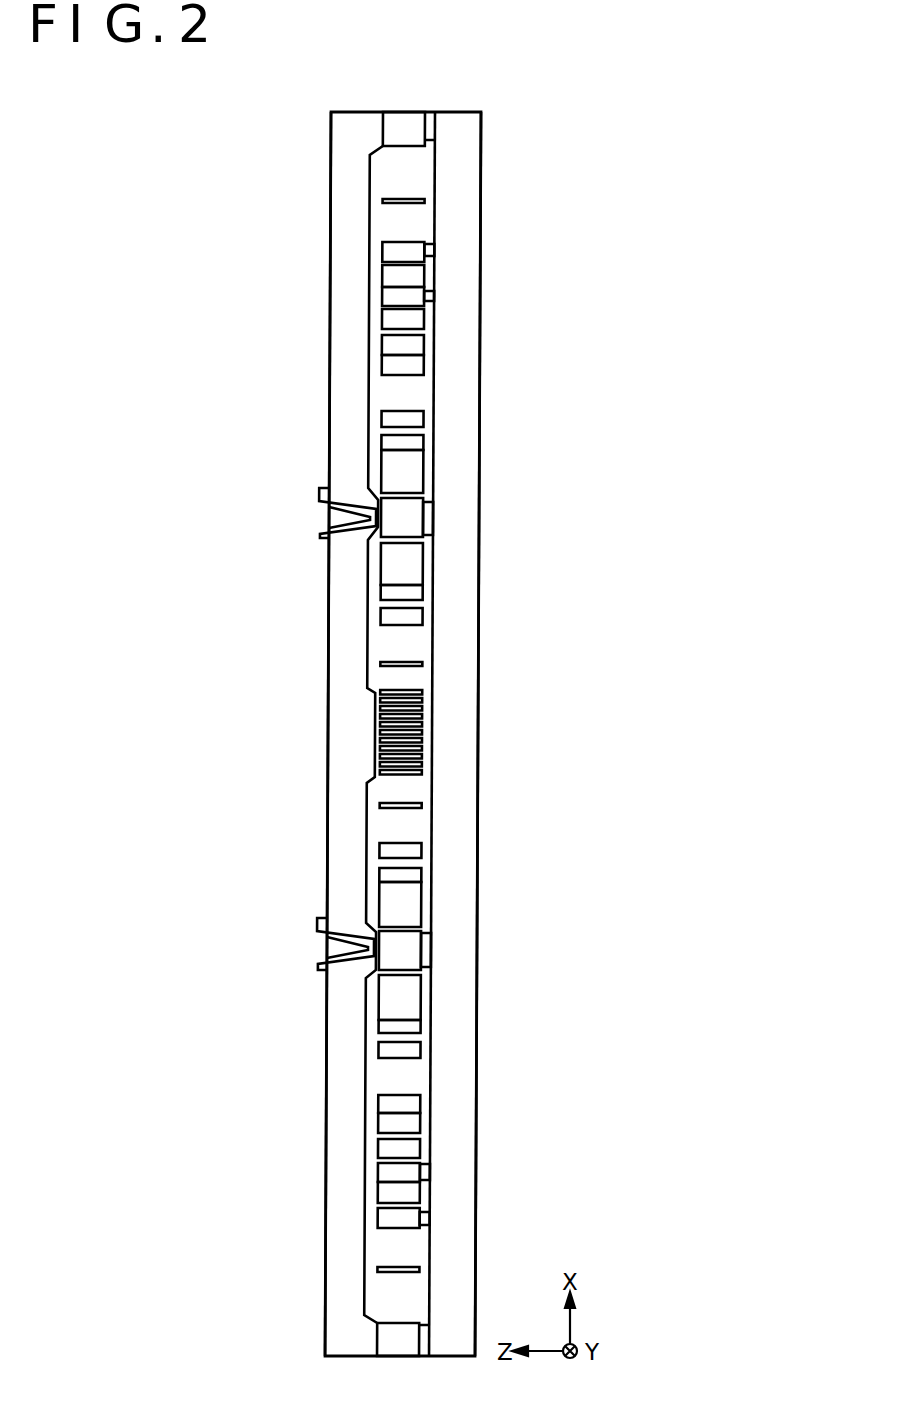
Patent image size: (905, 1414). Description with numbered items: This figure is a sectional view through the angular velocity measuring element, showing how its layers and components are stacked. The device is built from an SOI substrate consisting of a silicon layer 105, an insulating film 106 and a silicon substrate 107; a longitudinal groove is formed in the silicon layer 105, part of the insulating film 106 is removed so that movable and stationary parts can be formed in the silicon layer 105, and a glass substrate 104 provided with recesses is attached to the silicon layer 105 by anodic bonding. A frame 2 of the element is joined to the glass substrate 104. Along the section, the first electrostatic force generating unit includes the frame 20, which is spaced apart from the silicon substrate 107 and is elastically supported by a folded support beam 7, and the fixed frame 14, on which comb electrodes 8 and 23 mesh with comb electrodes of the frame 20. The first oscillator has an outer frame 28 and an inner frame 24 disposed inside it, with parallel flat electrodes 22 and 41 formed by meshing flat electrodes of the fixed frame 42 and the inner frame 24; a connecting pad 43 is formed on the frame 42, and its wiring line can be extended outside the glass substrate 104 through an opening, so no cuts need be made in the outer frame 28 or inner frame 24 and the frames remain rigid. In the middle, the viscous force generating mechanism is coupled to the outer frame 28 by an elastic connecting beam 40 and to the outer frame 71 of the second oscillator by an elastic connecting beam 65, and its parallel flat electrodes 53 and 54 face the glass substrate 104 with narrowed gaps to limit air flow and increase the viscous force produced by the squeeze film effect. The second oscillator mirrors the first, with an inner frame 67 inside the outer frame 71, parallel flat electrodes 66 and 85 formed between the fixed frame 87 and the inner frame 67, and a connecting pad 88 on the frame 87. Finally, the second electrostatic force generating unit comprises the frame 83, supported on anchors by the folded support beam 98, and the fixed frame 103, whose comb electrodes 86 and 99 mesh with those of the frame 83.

The frame 2 is at (396, 137).
The support beam 7 is at (392, 197).
The comb electrode 8 is at (392, 273).
The frame 14 is at (392, 250).
The frame 20 is at (392, 296).
The parallel flat electrode 22 is at (392, 470).
The comb electrode 23 is at (392, 344).
The inner frame 24 is at (392, 442).
The outer frame 28 is at (392, 418).
The elastic connecting beam 40 is at (392, 663).
The parallel flat electrode 41 is at (392, 565).
The frame 42 is at (392, 507).
The connecting pad 43 is at (325, 529).
The parallel flat electrode 53 is at (392, 690).
The parallel flat electrode 54 is at (392, 767).
The elastic connecting beam 65 is at (392, 804).
The parallel flat electrode 66 is at (392, 902).
The inner frame 67 is at (392, 875).
The outer frame 71 is at (392, 850).
The frame 83 is at (392, 1103).
The parallel flat electrode 85 is at (392, 998).
The comb electrode 86 is at (392, 1123).
The frame 87 is at (392, 940).
The connecting pad 88 is at (325, 962).
The support beam 98 is at (392, 1270).
The comb electrode 99 is at (392, 1192).
The frame 103 is at (392, 1148).
The glass substrate 104 is at (343, 118).
The silicon layer 105 is at (397, 119).
The insulating film 106 is at (429, 119).
The silicon substrate 107 is at (465, 119).